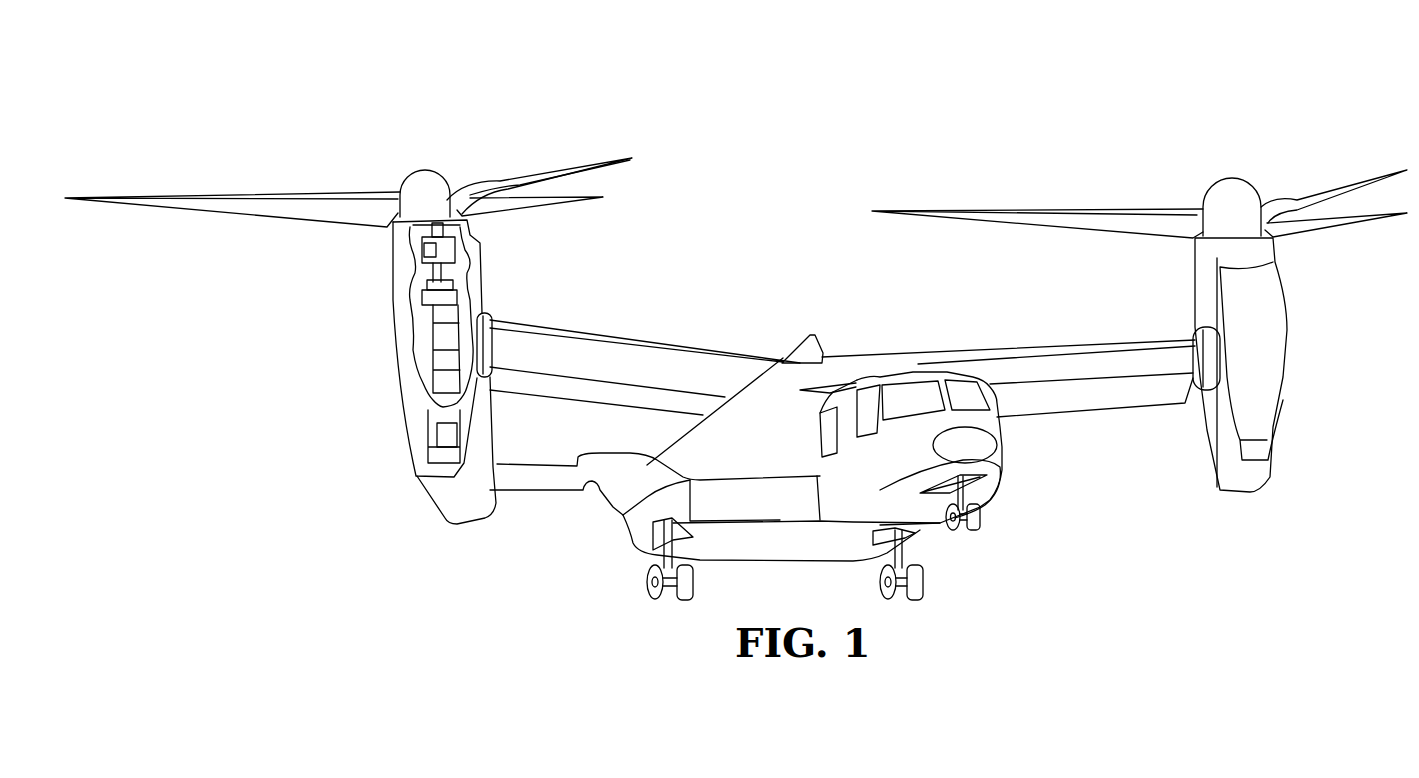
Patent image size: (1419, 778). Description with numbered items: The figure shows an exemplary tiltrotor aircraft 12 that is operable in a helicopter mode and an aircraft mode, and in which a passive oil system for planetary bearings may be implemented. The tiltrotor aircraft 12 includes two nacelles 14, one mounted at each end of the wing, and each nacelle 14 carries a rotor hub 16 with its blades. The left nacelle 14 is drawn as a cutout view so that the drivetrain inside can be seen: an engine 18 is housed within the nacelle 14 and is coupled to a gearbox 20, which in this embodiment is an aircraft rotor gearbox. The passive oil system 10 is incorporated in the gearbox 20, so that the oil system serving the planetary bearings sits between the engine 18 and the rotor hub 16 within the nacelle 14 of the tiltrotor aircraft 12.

The passive oil system 10 is at (420, 253).
The tiltrotor aircraft 12 is at (736, 335).
The nacelle 14 is at (397, 380).
The rotor hub 16 is at (428, 168).
The engine 18 is at (430, 340).
The gearbox 20 is at (480, 253).